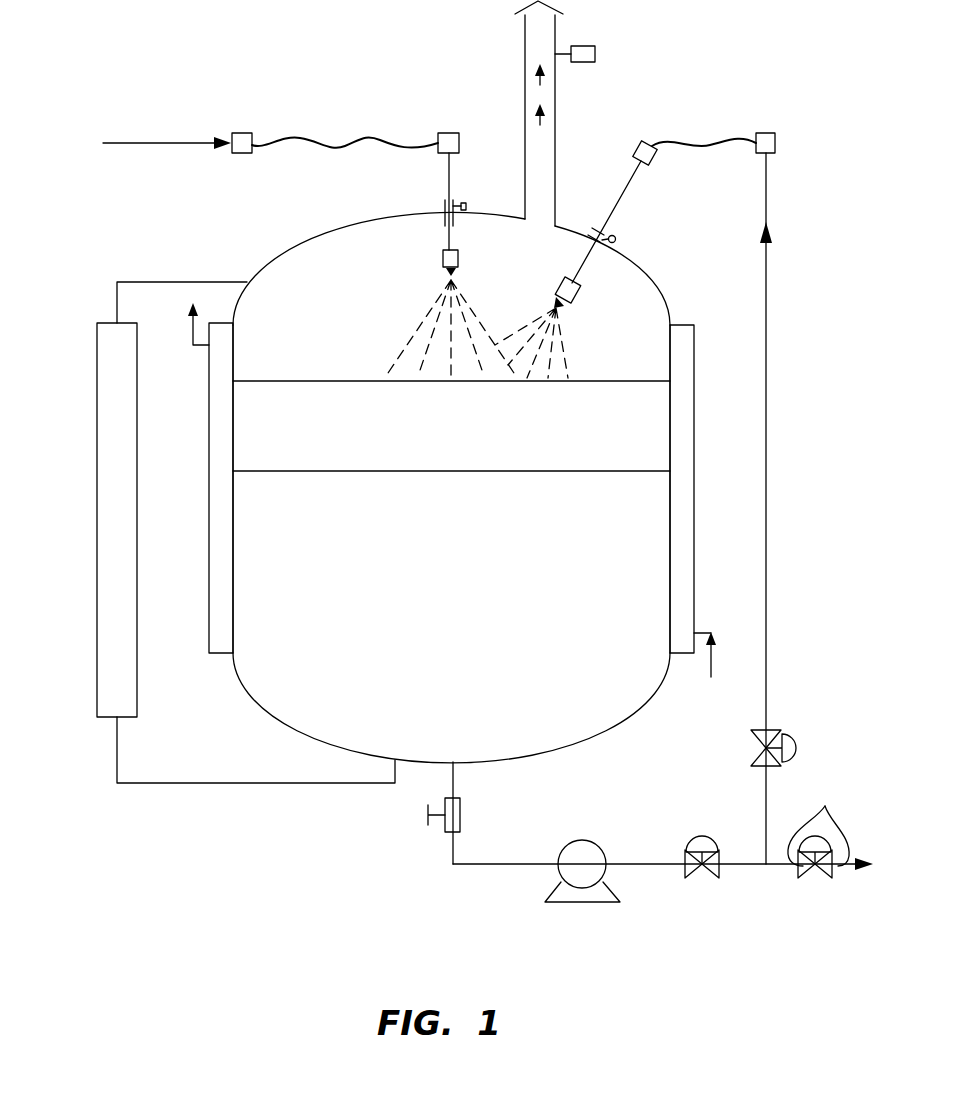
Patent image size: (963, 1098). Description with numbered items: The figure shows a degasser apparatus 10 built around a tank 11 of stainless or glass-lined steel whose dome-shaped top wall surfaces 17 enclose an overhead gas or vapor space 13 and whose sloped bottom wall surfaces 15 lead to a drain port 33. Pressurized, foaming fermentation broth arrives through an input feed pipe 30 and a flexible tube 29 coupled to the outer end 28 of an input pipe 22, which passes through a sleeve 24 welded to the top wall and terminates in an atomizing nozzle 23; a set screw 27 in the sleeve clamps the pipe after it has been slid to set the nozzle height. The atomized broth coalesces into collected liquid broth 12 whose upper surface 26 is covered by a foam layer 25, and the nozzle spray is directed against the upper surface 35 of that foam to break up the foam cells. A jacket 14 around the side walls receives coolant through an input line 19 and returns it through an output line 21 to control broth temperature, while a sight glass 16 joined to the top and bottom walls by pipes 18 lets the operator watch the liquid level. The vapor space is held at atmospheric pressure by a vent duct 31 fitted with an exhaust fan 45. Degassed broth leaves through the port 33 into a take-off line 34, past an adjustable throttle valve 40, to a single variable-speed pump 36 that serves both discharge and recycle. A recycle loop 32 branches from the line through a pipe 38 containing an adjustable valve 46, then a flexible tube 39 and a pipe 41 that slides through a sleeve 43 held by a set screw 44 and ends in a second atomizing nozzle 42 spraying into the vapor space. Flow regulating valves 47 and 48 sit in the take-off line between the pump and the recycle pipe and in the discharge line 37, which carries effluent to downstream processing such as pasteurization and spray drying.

The degasser apparatus 10 is at (299, 112).
The tank 11 is at (284, 241).
The collected liquid broth 12 is at (465, 640).
The overhead gas or vapor space 13 is at (330, 318).
The jacket 14 is at (208, 497).
The bottom wall surfaces 15 is at (308, 736).
The sight glass 16 is at (96, 635).
The top wall surfaces 17 is at (328, 231).
The pipes 18 is at (167, 281).
The input line 19 is at (713, 664).
The output line 21 is at (192, 330).
The input pipe 22 is at (452, 178).
The atomizing nozzle 23 is at (442, 258).
The sleeve 24 is at (444, 208).
The foam layer 25 is at (337, 438).
The upper surface of liquid 26 is at (588, 470).
The set screw 27 is at (467, 206).
The outer end of pipe 28 is at (448, 133).
The flexible tube 29 is at (362, 140).
The input feed pipe 30 is at (152, 142).
The vent pipe or duct 31 is at (557, 104).
The recycle loop 32 is at (800, 382).
The drain aperture or port 33 is at (453, 762).
The take-off line 34 is at (652, 866).
The upper surface of foam layer 35 is at (346, 380).
The pump 36 is at (587, 840).
The discharge line 37 is at (818, 823).
The pipe 38 is at (768, 702).
The flexible tube 39 is at (690, 140).
The adjustable throttle valve 40 is at (461, 815).
The pipe 41 is at (628, 186).
The second atomizing nozzle 42 is at (582, 288).
The sleeve 43 is at (598, 229).
The set screw 44 is at (618, 240).
The exhaust fan 45 is at (588, 46).
The adjustable valve 46 is at (751, 748).
The flow regulating valve 47 is at (702, 880).
The flow regulating valve 48 is at (813, 880).